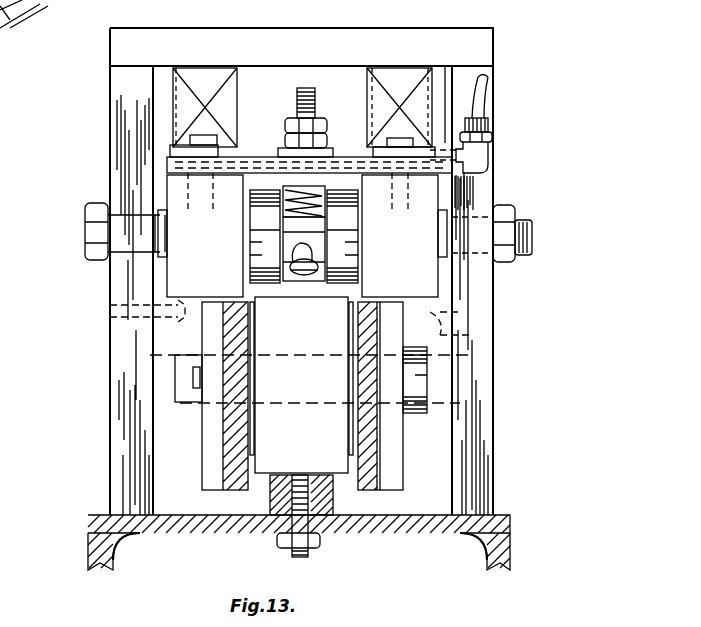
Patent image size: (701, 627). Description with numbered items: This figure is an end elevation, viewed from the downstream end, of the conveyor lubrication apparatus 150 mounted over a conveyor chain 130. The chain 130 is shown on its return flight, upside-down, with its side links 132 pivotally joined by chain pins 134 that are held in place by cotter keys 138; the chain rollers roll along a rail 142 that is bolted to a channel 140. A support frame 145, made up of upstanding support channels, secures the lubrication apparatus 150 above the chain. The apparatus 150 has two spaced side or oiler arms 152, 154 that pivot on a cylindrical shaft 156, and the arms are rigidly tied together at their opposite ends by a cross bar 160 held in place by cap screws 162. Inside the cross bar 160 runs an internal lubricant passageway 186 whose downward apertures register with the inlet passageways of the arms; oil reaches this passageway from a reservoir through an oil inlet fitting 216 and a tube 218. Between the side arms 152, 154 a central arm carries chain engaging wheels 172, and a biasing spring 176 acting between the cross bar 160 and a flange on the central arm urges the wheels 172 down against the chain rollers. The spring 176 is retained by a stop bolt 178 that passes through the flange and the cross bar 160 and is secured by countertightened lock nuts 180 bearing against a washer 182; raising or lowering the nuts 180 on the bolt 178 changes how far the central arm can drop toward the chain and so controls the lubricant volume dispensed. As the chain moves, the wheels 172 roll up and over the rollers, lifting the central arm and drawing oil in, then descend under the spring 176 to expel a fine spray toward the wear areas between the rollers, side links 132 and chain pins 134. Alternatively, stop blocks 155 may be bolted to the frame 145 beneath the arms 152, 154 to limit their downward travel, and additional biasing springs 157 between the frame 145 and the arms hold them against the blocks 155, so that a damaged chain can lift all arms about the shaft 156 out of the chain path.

The chain 130 is at (200, 422).
The side links 132 is at (392, 323).
The chain pins 134 is at (420, 383).
The cotter keys 138 is at (195, 375).
The channel 140 is at (378, 552).
The rail 142 is at (320, 503).
The support frame 145 is at (468, 468).
The conveyor lubrication apparatus 150 is at (345, 108).
The side arm 152 is at (425, 198).
The side arm 154 is at (178, 190).
The stop blocks 155 is at (160, 322).
The cylindrical shaft 156 is at (516, 212).
The biasing springs 157 is at (172, 98).
The cross bar 160 is at (170, 165).
The cap screws 162 is at (200, 142).
The chain engaging wheels 172 is at (258, 265).
The biasing spring 176 is at (283, 203).
The stop bolt 178 is at (297, 98).
The lock nuts 180 is at (325, 136).
The washer 182 is at (278, 152).
The internal lubricant passageway 186 is at (223, 175).
The oil inlet fitting 216 is at (477, 156).
The tube 218 is at (483, 97).